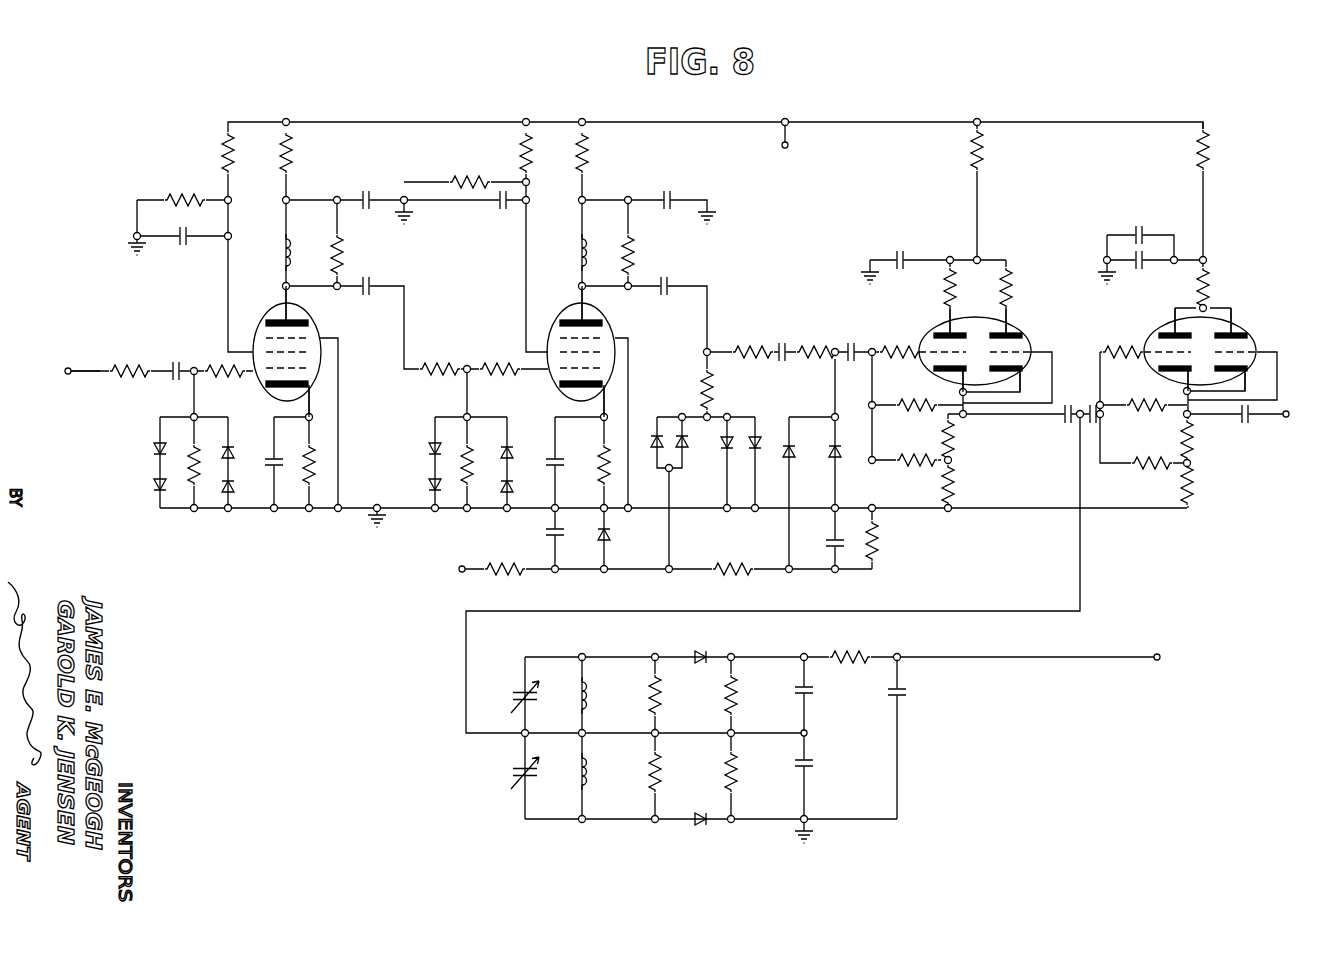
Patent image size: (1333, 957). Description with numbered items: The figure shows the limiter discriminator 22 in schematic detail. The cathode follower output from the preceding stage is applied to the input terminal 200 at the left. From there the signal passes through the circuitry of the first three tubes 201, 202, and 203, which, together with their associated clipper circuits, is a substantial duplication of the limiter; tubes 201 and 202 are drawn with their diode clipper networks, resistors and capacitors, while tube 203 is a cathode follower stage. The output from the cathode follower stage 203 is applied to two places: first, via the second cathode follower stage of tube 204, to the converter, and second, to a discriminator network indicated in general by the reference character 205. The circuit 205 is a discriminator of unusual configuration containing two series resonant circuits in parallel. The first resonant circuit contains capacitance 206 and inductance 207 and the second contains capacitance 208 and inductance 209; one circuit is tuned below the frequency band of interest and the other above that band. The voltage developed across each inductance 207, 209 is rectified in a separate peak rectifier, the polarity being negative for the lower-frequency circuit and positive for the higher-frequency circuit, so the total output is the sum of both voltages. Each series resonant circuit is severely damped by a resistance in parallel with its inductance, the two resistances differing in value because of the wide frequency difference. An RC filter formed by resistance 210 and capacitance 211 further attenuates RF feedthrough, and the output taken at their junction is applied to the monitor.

The limiter discriminator 22 is at (272, 681).
The input terminal 200 is at (71, 368).
The first tube 201 is at (267, 394).
The second tube 202 is at (551, 394).
The cathode follower stage 203 is at (1022, 329).
The second cathode follower stage tube 204 is at (1151, 332).
The discriminator network 205 is at (675, 645).
The capacitance 206 is at (530, 705).
The inductance 207 is at (592, 705).
The capacitance 208 is at (531, 781).
The inductance 209 is at (592, 781).
The resistance 210 is at (856, 651).
The capacitance 211 is at (903, 697).